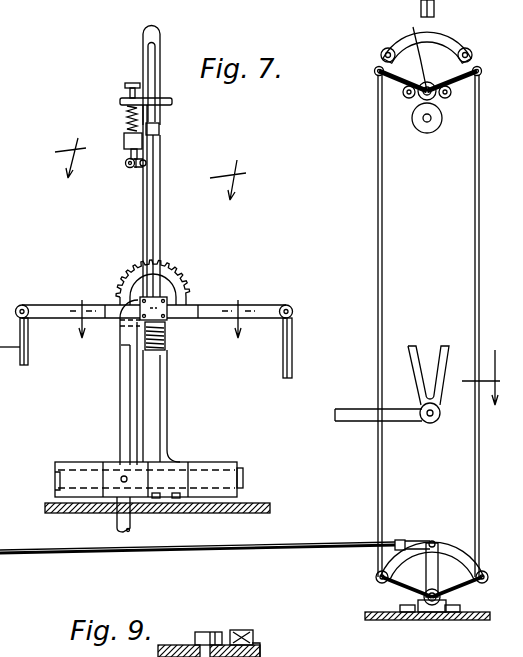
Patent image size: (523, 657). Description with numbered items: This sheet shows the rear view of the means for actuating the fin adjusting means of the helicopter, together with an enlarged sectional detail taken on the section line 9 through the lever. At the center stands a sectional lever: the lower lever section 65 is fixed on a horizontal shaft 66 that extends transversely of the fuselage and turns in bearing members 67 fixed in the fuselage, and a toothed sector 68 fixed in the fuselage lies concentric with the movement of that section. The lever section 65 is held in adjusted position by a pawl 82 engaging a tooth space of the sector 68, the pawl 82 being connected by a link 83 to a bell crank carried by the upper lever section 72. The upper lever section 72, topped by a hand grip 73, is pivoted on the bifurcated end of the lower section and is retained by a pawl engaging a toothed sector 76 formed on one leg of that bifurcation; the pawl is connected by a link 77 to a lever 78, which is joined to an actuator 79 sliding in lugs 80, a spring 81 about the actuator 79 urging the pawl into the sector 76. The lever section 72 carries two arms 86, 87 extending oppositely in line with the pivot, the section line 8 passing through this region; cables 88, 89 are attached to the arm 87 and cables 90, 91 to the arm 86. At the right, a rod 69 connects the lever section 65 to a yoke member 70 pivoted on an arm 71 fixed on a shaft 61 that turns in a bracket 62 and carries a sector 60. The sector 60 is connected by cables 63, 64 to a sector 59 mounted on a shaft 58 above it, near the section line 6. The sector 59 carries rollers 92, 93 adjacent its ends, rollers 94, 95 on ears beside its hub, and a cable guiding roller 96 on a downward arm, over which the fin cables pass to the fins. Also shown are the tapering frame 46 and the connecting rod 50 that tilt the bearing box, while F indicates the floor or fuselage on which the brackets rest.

In FIG. 7, the hand grip 73 is at (161, 34).
In FIG. 7, the lever section 72 is at (160, 215).
In FIG. 7, the link 83 is at (147, 237).
In FIG. 7, the spring 81 is at (127, 118).
In FIG. 7, the lugs 80 is at (124, 140).
In FIG. 7, the actuator 79 is at (126, 160).
In FIG. 7, the lever 78 is at (134, 166).
In FIG. 9, the lever 78 is at (262, 648).
In FIG. 7, the section line 9— 9 is at (151, 177).
In FIG. 7, the toothed sector 76 is at (190, 282).
In FIG. 7, the lever arm 86 is at (46, 300).
In FIG. 7, the lever arm 87 is at (250, 302).
In FIG. 7, the section line 8— 8 is at (166, 328).
In FIG. 7, the cable 91 is at (28, 345).
In FIG. 7, the cable 90 is at (11, 346).
In FIG. 7, the cable 88 is at (292, 360).
In FIG. 7, the cable 89 is at (283, 365).
In FIG. 7, the pawl 82 is at (163, 333).
In FIG. 7, the lever section 65 is at (121, 400).
In FIG. 7, the toothed sector 68 is at (167, 390).
In FIG. 7, the bearing members 67 is at (86, 468).
In FIG. 7, the horizontal shaft 66 is at (243, 478).
In FIG. 7, the floor F is at (262, 513).
In FIG. 7, the rod 69 is at (233, 548).
In FIG. 7, the shaft 58 is at (414, 30).
In FIG. 7, the sector 59 is at (445, 38).
In FIG. 7, the roller 92 is at (381, 55).
In FIG. 7, the roller 93 is at (472, 55).
In FIG. 7, the roller 94 is at (404, 96).
In FIG. 7, the roller 95 is at (450, 96).
In FIG. 7, the cable guiding roller 96 is at (423, 128).
In FIG. 7, the cable 63 is at (378, 338).
In FIG. 7, the cable 64 is at (475, 297).
In FIG. 7, the tapering frame 46 is at (412, 346).
In FIG. 7, the connecting link or rod 50 is at (355, 409).
In FIG. 7, the section line 6— 6 is at (481, 391).
In FIG. 7, the yoke member 70 is at (417, 541).
In FIG. 7, the sector 60 is at (452, 548).
In FIG. 7, the arm 71 is at (430, 568).
In FIG. 7, the bracket 62 is at (420, 612).
In FIG. 7, the shaft 61 is at (432, 605).
In FIG. 9, the link 77 is at (250, 632).